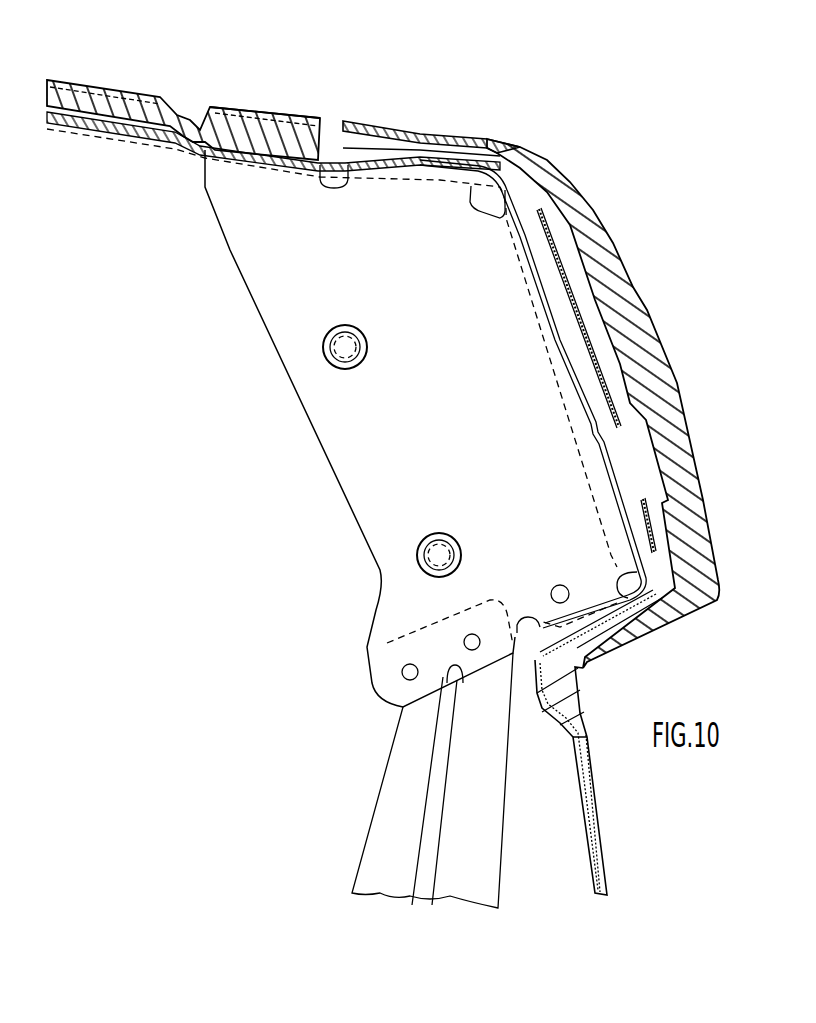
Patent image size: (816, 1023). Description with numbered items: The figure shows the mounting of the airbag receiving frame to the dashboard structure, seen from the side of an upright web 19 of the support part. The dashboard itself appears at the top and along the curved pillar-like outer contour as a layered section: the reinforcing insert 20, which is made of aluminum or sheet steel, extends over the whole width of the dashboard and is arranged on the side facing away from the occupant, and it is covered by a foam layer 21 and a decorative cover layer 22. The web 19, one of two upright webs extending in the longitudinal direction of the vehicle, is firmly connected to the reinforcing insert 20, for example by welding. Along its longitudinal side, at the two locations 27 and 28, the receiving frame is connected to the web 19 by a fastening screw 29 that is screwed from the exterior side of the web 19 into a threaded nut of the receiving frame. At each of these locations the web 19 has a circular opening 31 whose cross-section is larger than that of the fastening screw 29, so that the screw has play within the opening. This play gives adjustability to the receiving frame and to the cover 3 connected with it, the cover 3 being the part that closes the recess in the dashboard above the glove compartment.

The cover 3 is at (678, 387).
The upright web 19 is at (347, 470).
The reinforcing insert 20 is at (140, 145).
The foam layer 21 is at (88, 87).
The decorative cover layer 22 is at (148, 94).
The connection point 27 is at (323, 367).
The connection point 28 is at (420, 580).
The fastening screw 29 is at (360, 340).
The circular opening 31 is at (340, 325).